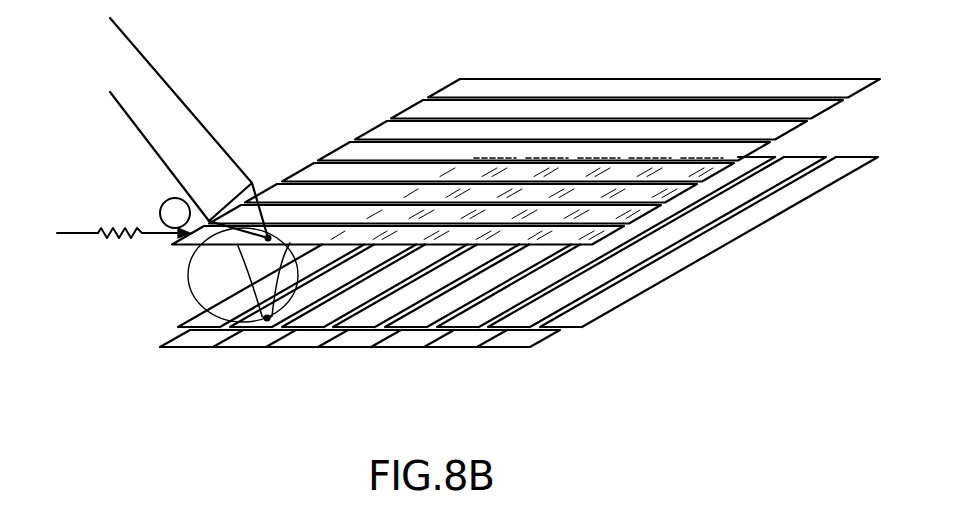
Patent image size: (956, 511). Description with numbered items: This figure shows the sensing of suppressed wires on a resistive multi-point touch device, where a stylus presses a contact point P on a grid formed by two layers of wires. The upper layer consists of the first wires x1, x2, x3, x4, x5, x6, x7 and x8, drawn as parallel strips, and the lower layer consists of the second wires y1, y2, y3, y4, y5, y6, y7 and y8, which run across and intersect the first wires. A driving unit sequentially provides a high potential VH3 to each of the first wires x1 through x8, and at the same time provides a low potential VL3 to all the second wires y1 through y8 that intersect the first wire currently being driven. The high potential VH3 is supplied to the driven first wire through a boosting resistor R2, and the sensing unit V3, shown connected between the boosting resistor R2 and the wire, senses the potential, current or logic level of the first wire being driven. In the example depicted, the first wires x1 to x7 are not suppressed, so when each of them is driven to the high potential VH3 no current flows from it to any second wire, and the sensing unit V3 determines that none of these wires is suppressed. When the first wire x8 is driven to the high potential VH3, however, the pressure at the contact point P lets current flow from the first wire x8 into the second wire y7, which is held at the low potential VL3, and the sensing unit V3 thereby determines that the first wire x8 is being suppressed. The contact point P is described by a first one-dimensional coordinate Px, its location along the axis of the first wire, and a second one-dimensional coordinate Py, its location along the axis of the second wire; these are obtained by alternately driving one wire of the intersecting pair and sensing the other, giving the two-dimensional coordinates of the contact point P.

The first wire x1 is at (654, 86).
The first wire x2 is at (617, 107).
The first wire x3 is at (581, 129).
The first wire x4 is at (544, 150).
The first wire x5 is at (508, 171).
The first wire x6 is at (471, 193).
The first wire x7 is at (435, 214).
The first wire x8 is at (398, 236).
The second wire y1 is at (709, 242).
The second wire y2 is at (657, 242).
The second wire y3 is at (606, 242).
The second wire y4 is at (544, 247).
The second wire y5 is at (492, 247).
The second wire y6 is at (441, 247).
The second wire y7 is at (389, 247).
The second wire y8 is at (337, 247).
The sensing unit V3 is at (175, 213).
The high potential VH3 is at (111, 247).
The boosting resistor R2 is at (120, 247).
The contact point P is at (148, 255).
The first 1-D coordinate Px is at (227, 235).
The second 1-D coordinate Py is at (250, 321).
The low potential VL3 is at (343, 350).